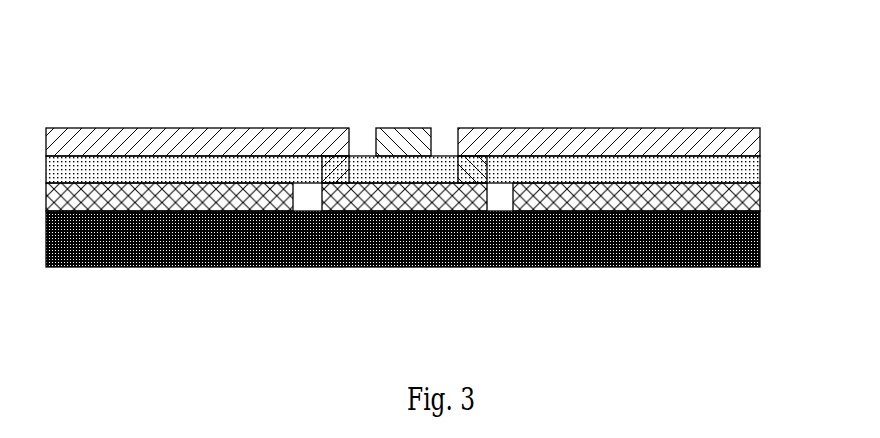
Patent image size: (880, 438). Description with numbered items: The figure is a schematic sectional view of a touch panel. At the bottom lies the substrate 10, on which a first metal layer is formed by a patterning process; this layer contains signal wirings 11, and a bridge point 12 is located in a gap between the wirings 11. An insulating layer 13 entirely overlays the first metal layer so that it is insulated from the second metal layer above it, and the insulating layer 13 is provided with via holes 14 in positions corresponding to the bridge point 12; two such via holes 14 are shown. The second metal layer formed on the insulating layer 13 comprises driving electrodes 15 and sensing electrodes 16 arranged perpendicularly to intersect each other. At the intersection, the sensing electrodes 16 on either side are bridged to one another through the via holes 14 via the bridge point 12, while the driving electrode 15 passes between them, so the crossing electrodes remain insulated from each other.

The substrate 10 is at (267, 245).
The wiring 11 is at (88, 195).
The bridge point 12 is at (392, 195).
The insulating layer 13 is at (651, 173).
The via hole 14 is at (337, 173).
The driving electrode 15 is at (399, 142).
The sensing electrode 16 is at (180, 145).